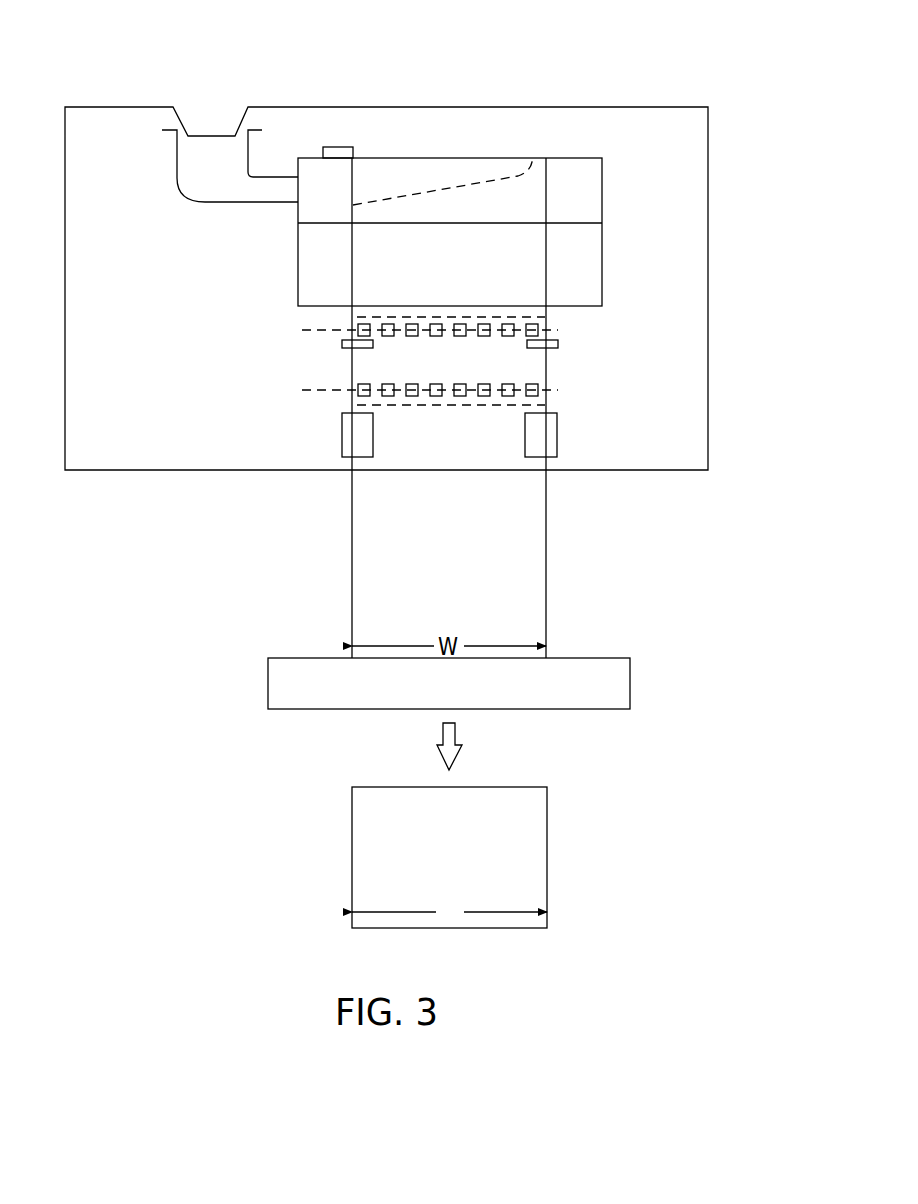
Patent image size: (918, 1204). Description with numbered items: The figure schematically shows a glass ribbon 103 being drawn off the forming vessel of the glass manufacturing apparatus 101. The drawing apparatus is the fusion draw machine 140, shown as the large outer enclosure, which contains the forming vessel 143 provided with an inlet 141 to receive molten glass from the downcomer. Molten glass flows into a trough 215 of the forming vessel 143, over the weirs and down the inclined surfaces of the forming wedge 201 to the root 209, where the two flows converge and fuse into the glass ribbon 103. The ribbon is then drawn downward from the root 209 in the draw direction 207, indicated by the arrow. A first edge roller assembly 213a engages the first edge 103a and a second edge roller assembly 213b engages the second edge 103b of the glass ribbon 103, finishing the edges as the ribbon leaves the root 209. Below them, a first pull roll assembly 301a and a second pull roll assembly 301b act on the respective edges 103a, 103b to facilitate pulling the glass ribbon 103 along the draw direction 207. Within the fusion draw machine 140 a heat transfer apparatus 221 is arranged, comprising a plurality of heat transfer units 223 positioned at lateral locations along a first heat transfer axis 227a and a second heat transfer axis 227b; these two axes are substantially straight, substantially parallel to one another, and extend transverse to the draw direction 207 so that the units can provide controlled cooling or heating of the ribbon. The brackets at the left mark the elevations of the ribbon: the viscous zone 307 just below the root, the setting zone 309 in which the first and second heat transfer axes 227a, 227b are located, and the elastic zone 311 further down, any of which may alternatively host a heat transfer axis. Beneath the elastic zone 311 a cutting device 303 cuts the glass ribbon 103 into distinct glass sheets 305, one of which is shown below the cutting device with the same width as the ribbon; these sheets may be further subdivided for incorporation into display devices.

The glass manufacturing apparatus 101 is at (736, 204).
The fusion draw machine 140 is at (708, 138).
The inlet 141 is at (177, 160).
The forming vessel 143 is at (622, 143).
The forming wedge 201 is at (546, 143).
The trough 215 is at (440, 187).
The glass ribbon 103 is at (422, 408).
The first edge 103a is at (352, 572).
The second edge 103b is at (546, 578).
The root 209 is at (447, 306).
The heat transfer apparatus 221 is at (502, 328).
The first heat transfer axis 227a is at (557, 330).
The second heat transfer axis 227b is at (557, 390).
The heat transfer units 223 is at (417, 320).
The first edge roller assembly 213a is at (373, 344).
The second edge roller assembly 213b is at (527, 344).
The first pull roll assembly 301a is at (373, 448).
The second pull roll assembly 301b is at (557, 418).
The draw direction 207 is at (450, 410).
The viscous zone 307 is at (302, 302).
The setting zone 309 is at (300, 323).
The elastic zone 311 is at (300, 407).
The cutting device 303 is at (652, 675).
The glass sheets 305 is at (533, 787).